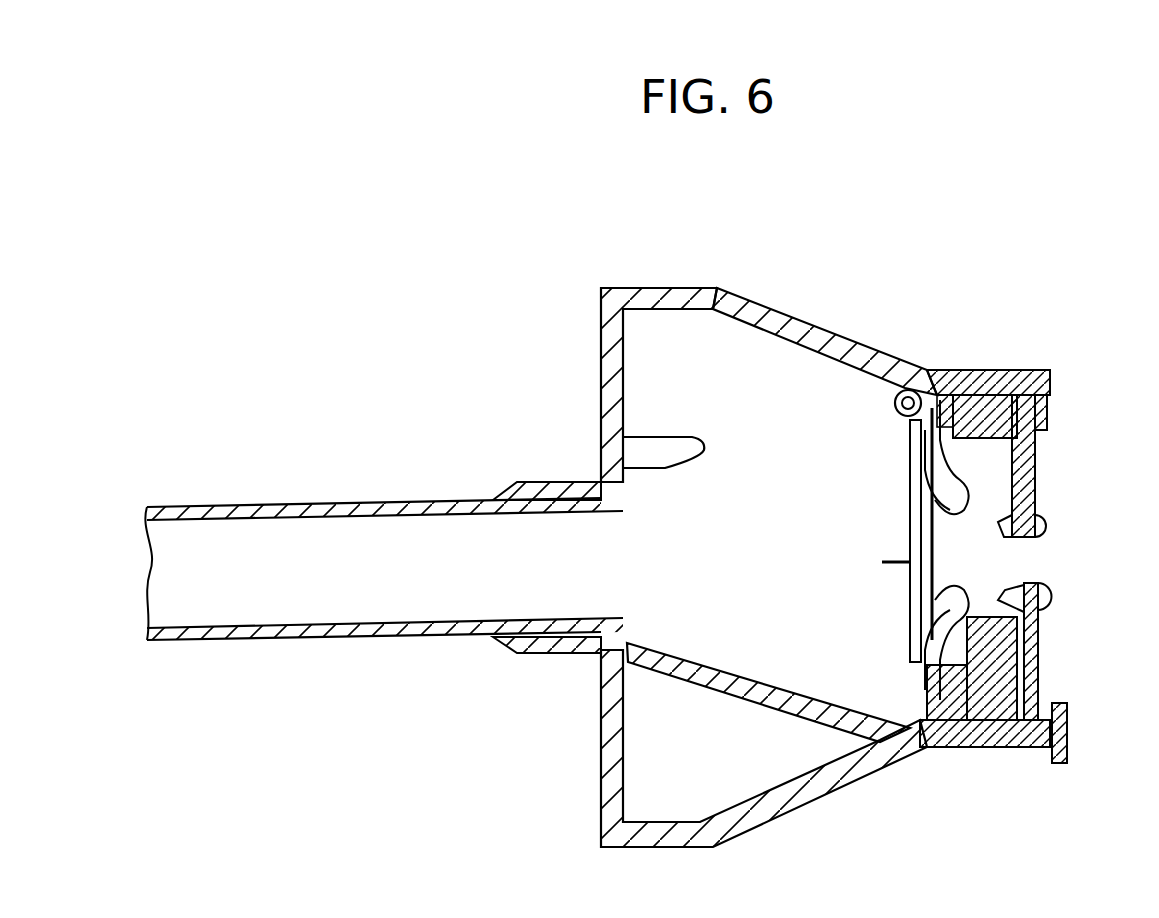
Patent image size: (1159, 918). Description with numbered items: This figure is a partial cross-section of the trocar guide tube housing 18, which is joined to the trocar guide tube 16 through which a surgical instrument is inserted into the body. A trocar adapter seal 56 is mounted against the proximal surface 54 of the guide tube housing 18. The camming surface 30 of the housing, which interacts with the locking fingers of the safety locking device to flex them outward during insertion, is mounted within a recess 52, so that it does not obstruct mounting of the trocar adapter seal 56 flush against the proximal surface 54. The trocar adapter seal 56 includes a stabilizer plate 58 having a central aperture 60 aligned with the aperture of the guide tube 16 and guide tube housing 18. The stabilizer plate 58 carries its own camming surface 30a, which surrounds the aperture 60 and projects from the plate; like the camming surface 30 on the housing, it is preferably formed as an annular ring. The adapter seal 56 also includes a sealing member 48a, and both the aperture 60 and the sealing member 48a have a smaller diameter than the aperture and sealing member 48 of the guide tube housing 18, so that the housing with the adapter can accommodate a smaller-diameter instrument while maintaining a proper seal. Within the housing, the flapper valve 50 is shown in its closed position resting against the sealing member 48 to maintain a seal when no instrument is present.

The trocar guide tube 16 is at (452, 635).
The trocar guide tube housing 18 is at (836, 349).
The camming surface 30 is at (1035, 488).
The camming surface 30a is at (1040, 600).
The sealing member 48 is at (940, 508).
The sealing member 48a is at (1010, 585).
The flapper valve 50 is at (913, 618).
The recess 52 is at (1038, 652).
The proximal surface 54 is at (975, 368).
The trocar adapter seal 56 is at (1070, 456).
The stabilizer plate 58 is at (1040, 645).
The central aperture 60 is at (1035, 576).